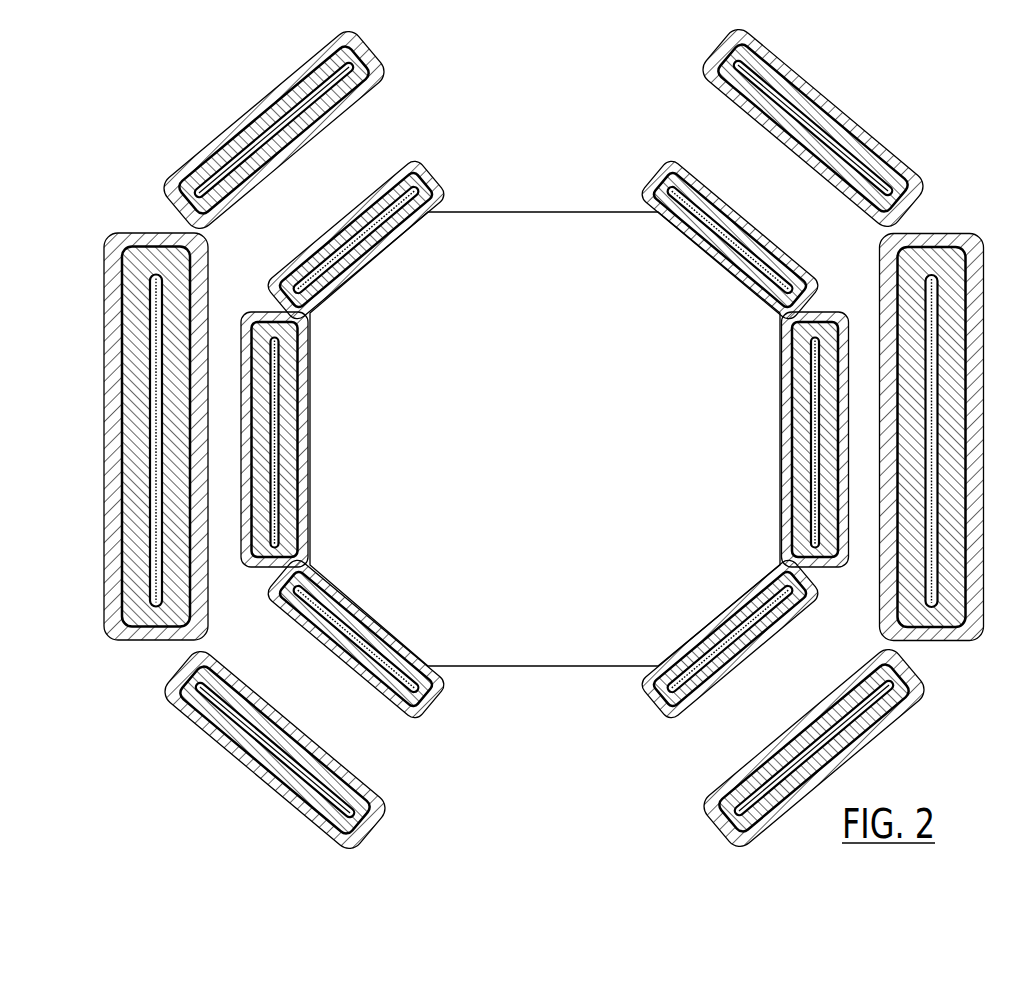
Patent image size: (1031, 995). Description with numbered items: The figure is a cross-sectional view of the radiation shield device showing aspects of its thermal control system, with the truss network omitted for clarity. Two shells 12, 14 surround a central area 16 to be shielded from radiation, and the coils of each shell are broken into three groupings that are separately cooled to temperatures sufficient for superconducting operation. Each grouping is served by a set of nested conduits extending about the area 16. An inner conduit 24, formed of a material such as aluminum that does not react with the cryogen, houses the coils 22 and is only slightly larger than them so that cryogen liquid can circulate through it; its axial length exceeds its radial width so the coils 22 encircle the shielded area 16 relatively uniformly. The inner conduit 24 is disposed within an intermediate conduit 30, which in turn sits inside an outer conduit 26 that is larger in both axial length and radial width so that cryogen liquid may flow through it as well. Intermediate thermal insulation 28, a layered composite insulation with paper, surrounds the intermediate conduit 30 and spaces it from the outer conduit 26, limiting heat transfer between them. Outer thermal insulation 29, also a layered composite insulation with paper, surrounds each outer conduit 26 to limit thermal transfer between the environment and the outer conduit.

The shell 12 is at (455, 160).
The shell 14 is at (830, 76).
The area to be shielded from radiation 16 is at (540, 212).
The coils 22 is at (150, 462).
The inner conduit 24 is at (165, 380).
The outer conduit 26 is at (112, 320).
The intermediate thermal insulation 28 is at (130, 517).
The outer thermal insulation 29 is at (112, 250).
The intermediate conduit 30 is at (148, 600).